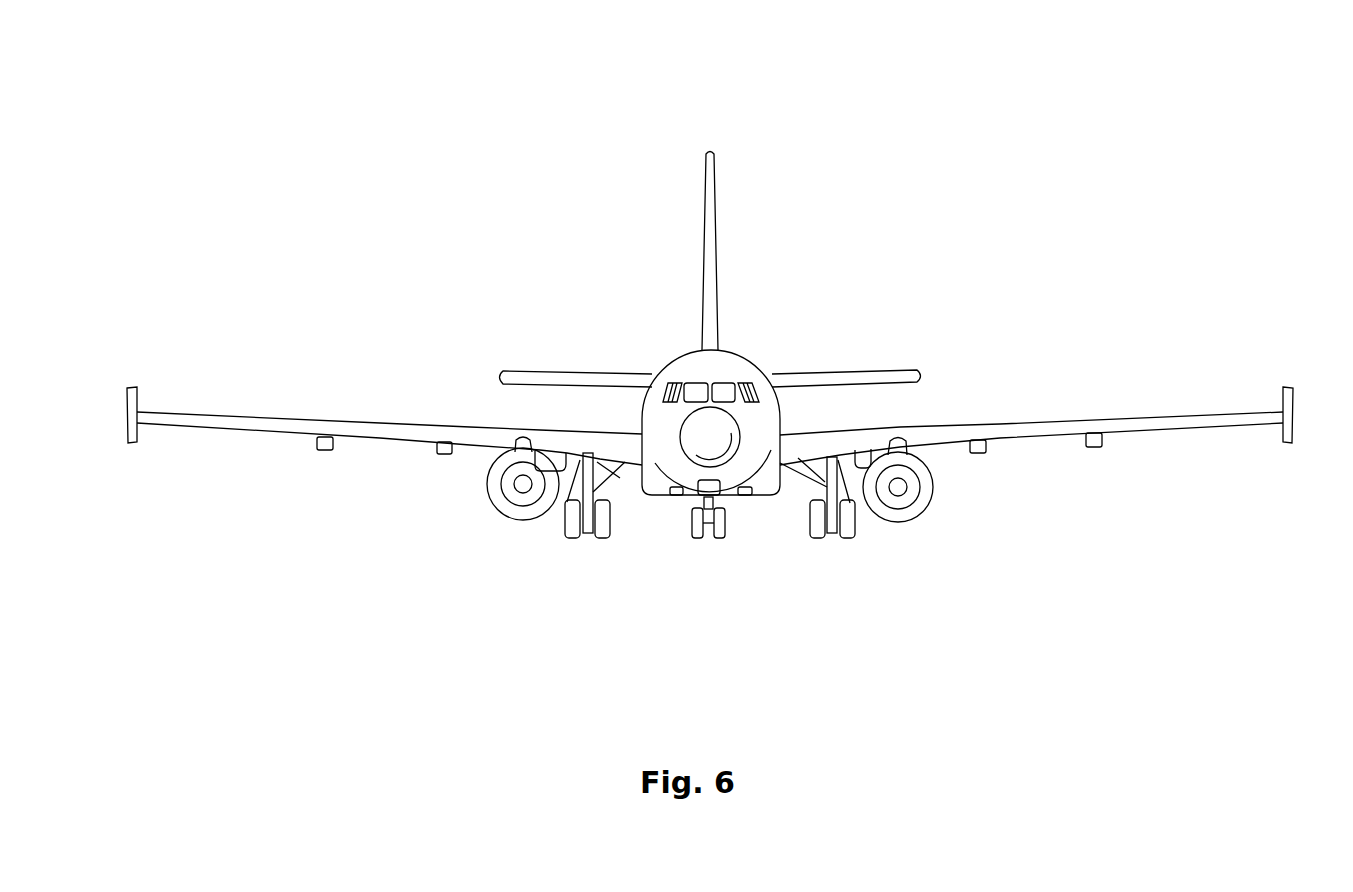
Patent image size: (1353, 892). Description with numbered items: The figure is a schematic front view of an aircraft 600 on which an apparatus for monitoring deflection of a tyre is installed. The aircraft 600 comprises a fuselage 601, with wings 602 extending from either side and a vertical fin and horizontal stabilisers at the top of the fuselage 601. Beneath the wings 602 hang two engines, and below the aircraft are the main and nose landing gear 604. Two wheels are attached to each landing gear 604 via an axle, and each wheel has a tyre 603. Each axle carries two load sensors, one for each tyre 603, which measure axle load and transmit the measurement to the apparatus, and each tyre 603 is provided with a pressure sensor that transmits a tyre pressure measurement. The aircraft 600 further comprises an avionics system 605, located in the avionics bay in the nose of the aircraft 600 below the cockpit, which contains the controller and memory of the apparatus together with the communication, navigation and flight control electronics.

The aircraft 600 is at (482, 132).
The fuselage 601 is at (735, 365).
The wings 602 is at (1000, 435).
The tyre 603 is at (845, 538).
The main and nose landing gear 604 is at (810, 507).
The avionics system 605 is at (700, 430).